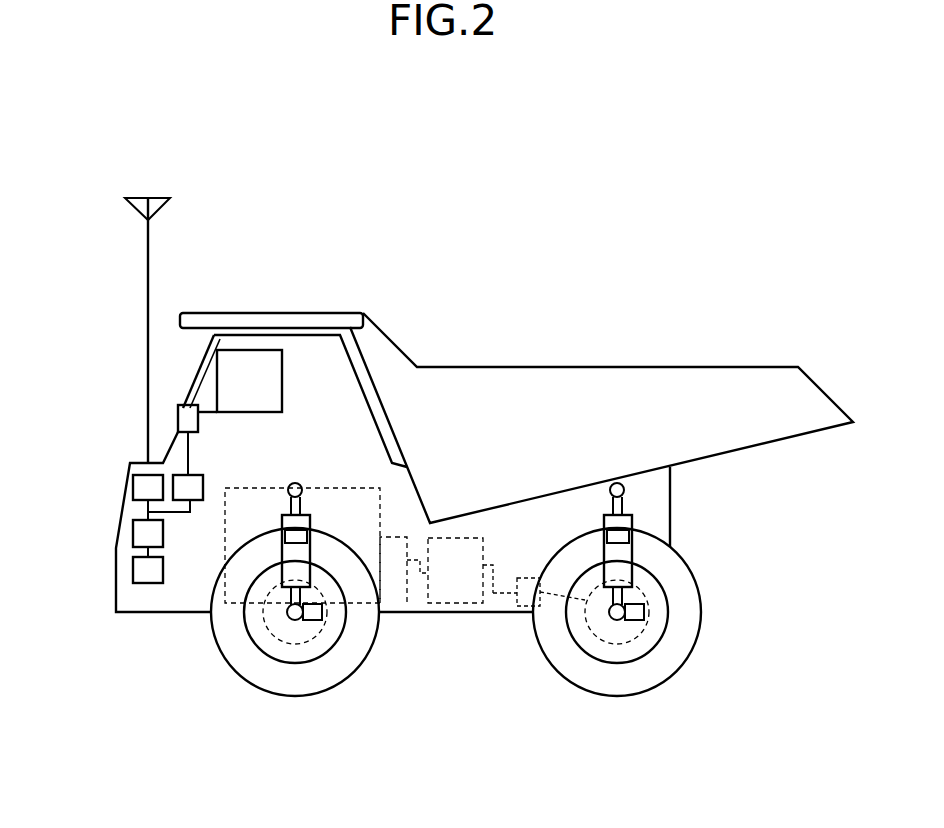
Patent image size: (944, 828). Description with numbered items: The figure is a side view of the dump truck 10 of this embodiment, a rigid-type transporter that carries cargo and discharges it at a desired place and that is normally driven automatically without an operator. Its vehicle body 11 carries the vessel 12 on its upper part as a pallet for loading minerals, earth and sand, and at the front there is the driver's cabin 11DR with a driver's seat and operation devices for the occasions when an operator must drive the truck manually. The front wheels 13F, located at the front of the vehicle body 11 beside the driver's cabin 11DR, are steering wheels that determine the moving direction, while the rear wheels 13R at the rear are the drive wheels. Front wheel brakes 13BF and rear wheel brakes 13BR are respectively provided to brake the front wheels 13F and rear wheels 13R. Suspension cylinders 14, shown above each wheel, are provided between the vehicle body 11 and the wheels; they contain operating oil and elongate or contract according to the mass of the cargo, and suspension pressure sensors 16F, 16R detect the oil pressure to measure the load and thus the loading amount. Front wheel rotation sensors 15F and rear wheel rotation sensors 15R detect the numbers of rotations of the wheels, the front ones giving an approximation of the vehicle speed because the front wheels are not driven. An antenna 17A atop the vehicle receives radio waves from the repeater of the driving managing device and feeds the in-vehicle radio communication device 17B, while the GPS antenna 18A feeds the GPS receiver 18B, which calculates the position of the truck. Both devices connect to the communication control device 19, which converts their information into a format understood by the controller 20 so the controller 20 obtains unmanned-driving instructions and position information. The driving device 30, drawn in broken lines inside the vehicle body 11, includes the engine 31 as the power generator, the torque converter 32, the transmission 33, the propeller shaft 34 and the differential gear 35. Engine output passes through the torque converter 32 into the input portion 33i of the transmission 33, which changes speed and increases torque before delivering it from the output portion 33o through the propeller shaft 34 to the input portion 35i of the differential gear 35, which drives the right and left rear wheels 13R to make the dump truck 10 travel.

The dump truck 10 is at (656, 158).
The vehicle body 11 is at (672, 470).
The driver's cabin 11DR is at (235, 370).
The vessel 12 is at (807, 403).
The front wheels 13F is at (247, 683).
The rear wheels 13R is at (680, 672).
The front wheel brakes 13BF is at (293, 646).
The rear wheel brakes 13BR is at (612, 646).
The suspension cylinders 14 is at (312, 553).
The front wheel rotation sensors 15F is at (322, 614).
The rear wheel rotation sensors 15R is at (645, 611).
The suspension pressure sensor 16F is at (294, 482).
The suspension pressure sensor 16R is at (632, 539).
The antenna 17A is at (155, 193).
The in-vehicle radio communication device 17B is at (133, 487).
The GPS antenna 18A is at (176, 409).
The GPS receiver 18B is at (200, 502).
The communication control device 19 is at (133, 536).
The controller 20 is at (133, 572).
The driving device 30 is at (662, 252).
The engine 31 is at (365, 512).
The torque converter 32 is at (396, 553).
The transmission 33 is at (468, 560).
The input portion 33i is at (420, 590).
The output portion 33o is at (488, 605).
The propeller shaft 34 is at (505, 593).
The differential gear 35 is at (585, 572).
The input portion 35i is at (521, 608).